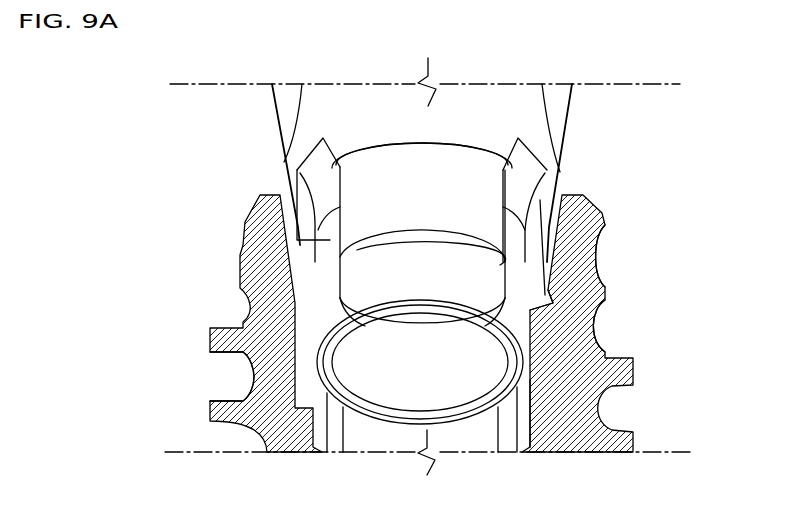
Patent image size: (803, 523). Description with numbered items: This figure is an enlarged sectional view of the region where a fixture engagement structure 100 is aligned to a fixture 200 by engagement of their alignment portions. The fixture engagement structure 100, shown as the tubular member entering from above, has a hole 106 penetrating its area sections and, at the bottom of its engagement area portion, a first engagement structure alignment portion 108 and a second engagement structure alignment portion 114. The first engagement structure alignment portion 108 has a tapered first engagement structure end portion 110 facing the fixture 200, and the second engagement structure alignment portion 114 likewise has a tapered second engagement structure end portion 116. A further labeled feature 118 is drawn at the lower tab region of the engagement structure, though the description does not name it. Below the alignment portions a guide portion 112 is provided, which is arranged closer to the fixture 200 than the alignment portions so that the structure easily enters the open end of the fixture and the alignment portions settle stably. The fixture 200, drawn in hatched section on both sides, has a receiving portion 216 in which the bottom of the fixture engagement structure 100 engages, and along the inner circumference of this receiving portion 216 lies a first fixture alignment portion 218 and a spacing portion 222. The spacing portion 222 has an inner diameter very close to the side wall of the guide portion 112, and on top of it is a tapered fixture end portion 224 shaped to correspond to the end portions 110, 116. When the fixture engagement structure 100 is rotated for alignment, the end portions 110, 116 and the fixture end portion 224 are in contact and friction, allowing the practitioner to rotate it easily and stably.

The fixture engagement structure 100 is at (478, 205).
The hole 106 is at (431, 389).
The first engagement structure alignment portion 108 is at (550, 259).
The first engagement structure end portion 110 is at (578, 322).
The guide portion 112 is at (338, 298).
The second engagement structure alignment portion 114 is at (390, 168).
The second engagement structure end portion 116 is at (347, 260).
The locking tab 118 is at (330, 243).
The fixture 200 is at (472, 323).
The receiving portion 216 is at (560, 190).
The first fixture alignment portion 218 is at (307, 374).
The spacing portion 222 is at (515, 372).
The fixture end portion 224 is at (553, 293).